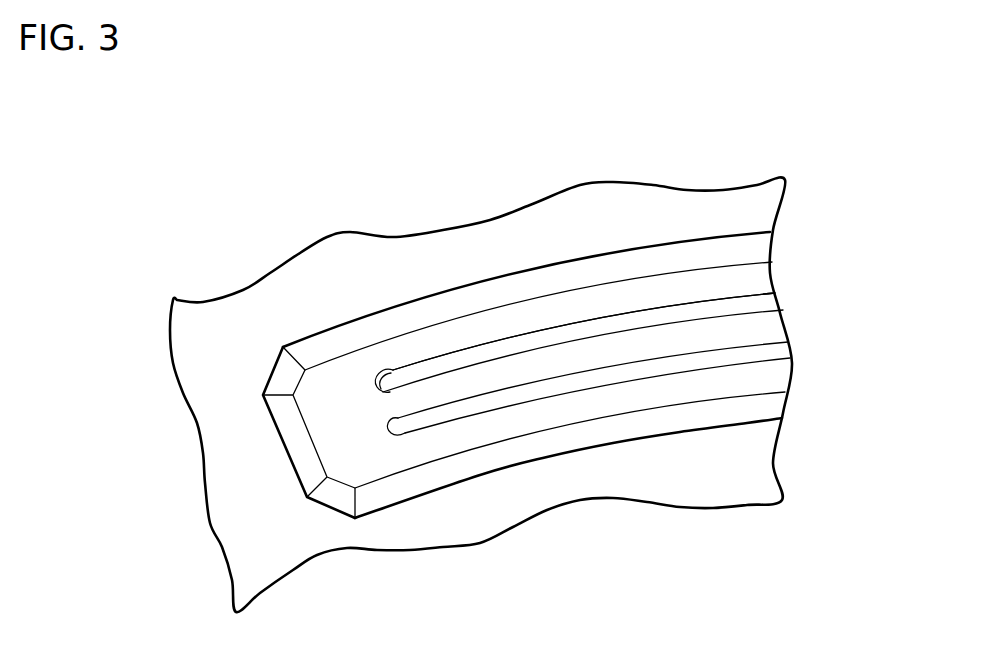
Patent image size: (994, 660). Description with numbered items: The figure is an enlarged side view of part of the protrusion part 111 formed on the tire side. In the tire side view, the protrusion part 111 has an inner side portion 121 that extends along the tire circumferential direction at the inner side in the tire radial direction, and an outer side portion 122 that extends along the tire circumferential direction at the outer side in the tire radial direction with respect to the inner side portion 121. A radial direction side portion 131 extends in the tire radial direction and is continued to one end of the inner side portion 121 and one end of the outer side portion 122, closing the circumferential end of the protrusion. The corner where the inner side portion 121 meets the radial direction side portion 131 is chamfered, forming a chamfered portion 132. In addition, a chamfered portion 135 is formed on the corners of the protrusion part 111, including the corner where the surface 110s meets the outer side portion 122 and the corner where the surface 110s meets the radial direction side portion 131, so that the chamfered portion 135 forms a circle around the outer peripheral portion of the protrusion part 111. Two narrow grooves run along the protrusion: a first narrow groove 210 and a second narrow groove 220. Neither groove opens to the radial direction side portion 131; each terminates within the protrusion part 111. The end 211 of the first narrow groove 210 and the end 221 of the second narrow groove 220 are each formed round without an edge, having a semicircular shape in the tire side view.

The radial direction side portion 131 is at (278, 442).
The chamfered portion 132 is at (275, 367).
The protrusion part 111 is at (709, 233).
The surface 110s is at (677, 290).
The outer side portion 122 is at (545, 263).
The chamfered portion 135 is at (460, 303).
The inner side portion 121 is at (617, 442).
The second narrow groove 220 is at (768, 302).
The end of the second narrow groove 221 is at (393, 368).
The first narrow groove 210 is at (767, 355).
The end of the first narrow groove 211 is at (405, 433).